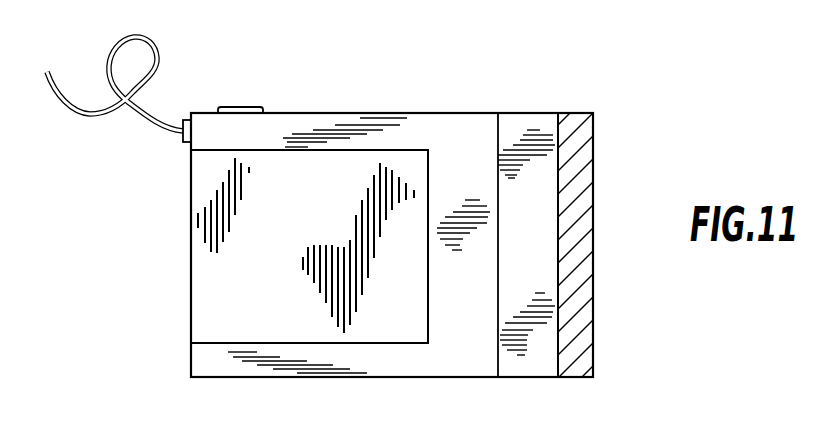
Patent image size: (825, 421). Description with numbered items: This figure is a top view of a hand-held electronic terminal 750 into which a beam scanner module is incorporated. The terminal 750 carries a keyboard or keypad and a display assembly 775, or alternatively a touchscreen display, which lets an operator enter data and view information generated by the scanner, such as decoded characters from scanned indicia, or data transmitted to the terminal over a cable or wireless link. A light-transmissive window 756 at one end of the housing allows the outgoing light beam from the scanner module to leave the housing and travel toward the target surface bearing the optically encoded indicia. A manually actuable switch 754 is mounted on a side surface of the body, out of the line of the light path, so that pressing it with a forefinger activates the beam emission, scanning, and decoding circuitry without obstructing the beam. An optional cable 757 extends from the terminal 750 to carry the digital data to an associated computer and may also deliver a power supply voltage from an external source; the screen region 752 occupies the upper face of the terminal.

The terminal 750 is at (498, 98).
The display screen 752 is at (191, 223).
The manually actuable switch 754 is at (242, 106).
The light-transmissive window 756 is at (593, 168).
The cable 757 is at (158, 45).
The display assembly 775 is at (412, 323).